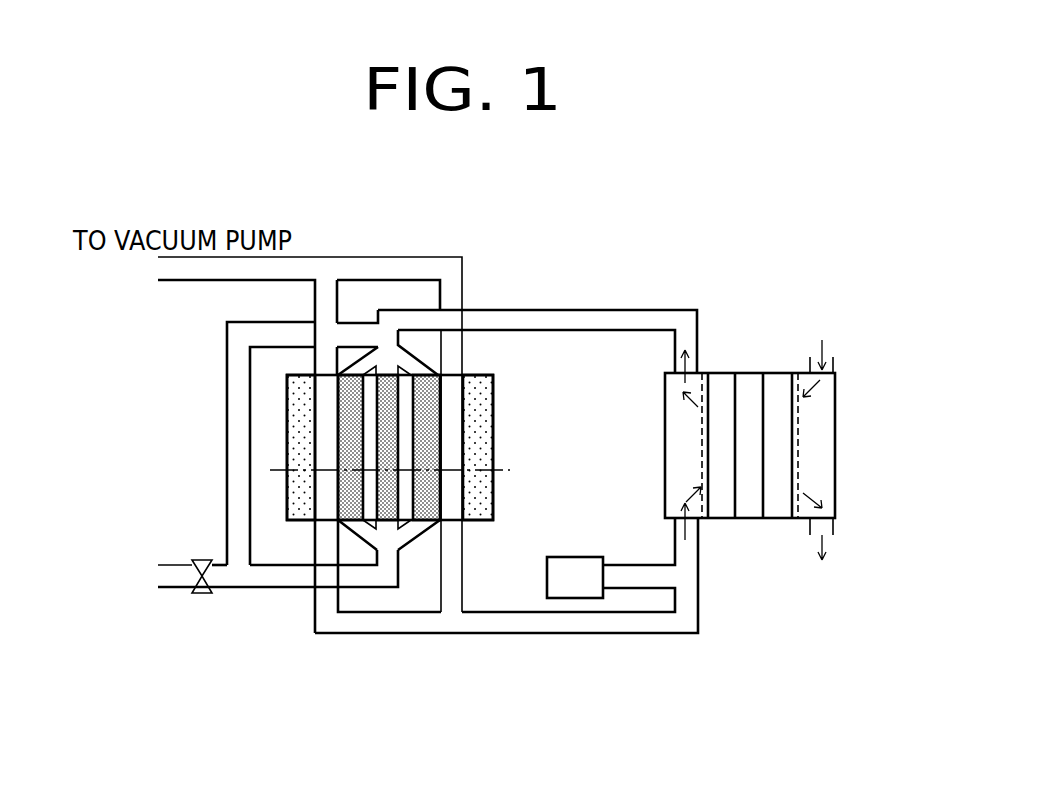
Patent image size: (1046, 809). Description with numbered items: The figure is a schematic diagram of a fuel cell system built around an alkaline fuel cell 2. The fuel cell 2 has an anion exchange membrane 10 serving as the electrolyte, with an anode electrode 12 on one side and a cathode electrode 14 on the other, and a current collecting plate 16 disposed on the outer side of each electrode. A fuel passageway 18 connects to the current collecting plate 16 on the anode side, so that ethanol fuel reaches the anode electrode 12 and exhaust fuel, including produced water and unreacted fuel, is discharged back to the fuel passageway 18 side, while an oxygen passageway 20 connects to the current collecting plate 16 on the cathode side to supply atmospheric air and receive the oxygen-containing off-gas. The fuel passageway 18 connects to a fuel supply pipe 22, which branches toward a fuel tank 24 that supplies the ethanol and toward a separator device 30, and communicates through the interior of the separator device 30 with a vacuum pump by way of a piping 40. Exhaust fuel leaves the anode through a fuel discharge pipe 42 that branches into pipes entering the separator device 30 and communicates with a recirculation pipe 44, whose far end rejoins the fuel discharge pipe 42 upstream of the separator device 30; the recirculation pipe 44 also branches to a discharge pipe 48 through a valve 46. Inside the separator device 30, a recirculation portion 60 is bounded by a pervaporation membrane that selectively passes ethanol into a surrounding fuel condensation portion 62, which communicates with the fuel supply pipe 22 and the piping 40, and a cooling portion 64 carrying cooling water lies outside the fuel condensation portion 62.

The alkaline fuel cell 2 is at (852, 360).
The anion exchange membrane 10 is at (748, 390).
The anode electrode 12 is at (718, 393).
The cathode electrode 14 is at (775, 390).
The current collecting plate 16 is at (778, 520).
The fuel passageway 18 is at (668, 460).
The oxygen passageway 20 is at (755, 424).
The fuel supply pipe 22 is at (323, 552).
The fuel tank 24 is at (582, 575).
The separator device 30 is at (419, 471).
The piping 40 is at (328, 302).
The fuel discharge pipe 42 is at (622, 310).
The recirculation pipe 44 is at (238, 375).
The valve 46 is at (205, 593).
The discharge pipe 48 is at (183, 572).
The recirculation portion 60 is at (423, 400).
The fuel condensation portion 62 is at (450, 437).
The cooling portion 64 is at (480, 493).